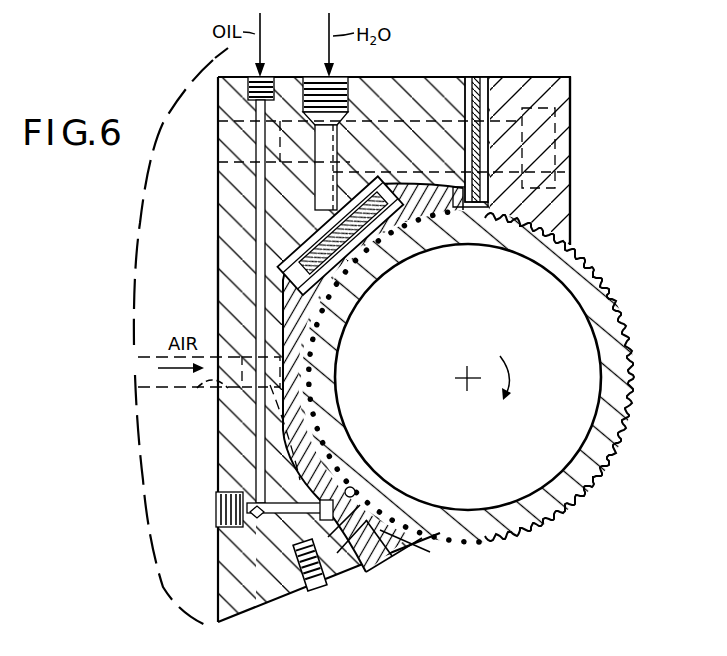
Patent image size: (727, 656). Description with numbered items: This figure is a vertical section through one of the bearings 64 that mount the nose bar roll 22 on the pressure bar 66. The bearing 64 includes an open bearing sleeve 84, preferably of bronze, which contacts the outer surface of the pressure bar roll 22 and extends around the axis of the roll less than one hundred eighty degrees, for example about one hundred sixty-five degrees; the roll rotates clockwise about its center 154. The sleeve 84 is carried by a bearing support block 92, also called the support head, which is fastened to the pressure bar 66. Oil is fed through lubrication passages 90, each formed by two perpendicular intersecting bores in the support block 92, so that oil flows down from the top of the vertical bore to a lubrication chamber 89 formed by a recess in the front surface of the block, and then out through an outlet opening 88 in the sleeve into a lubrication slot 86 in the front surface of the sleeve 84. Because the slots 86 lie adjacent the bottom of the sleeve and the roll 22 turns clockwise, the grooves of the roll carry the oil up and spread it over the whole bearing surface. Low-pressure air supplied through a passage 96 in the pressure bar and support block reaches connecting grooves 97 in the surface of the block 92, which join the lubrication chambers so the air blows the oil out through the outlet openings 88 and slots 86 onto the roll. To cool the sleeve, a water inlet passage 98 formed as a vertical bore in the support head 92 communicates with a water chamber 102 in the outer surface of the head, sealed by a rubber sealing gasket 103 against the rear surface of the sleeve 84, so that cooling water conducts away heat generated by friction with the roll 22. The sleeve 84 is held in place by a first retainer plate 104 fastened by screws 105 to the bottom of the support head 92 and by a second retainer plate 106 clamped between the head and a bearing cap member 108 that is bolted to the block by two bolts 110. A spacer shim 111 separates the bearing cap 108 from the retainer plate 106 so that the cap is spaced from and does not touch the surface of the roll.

The nose bar roll 22 is at (632, 332).
The bearing 64 is at (427, 72).
The pressure bar 66 is at (137, 250).
The bearing sleeve 84 is at (300, 425).
The lubrication slot 86 is at (352, 488).
The outlet opening 88 is at (374, 542).
The lubrication chamber 89 is at (358, 567).
The lubrication passage 90 is at (267, 74).
The bearing support block 92 is at (218, 276).
The air passage 96 is at (214, 378).
The connecting groove 97 is at (300, 442).
The water inlet passage 98 is at (346, 92).
The water chamber 102 is at (322, 242).
The sealing gasket 103 is at (372, 205).
The first retainer plate 104 is at (401, 560).
The screw 105 is at (325, 591).
The second retainer plate 106 is at (478, 76).
The bearing cap member 108 is at (521, 77).
The bolt 110 is at (557, 131).
The spacer shim 111 is at (483, 77).
The center 154 is at (468, 377).